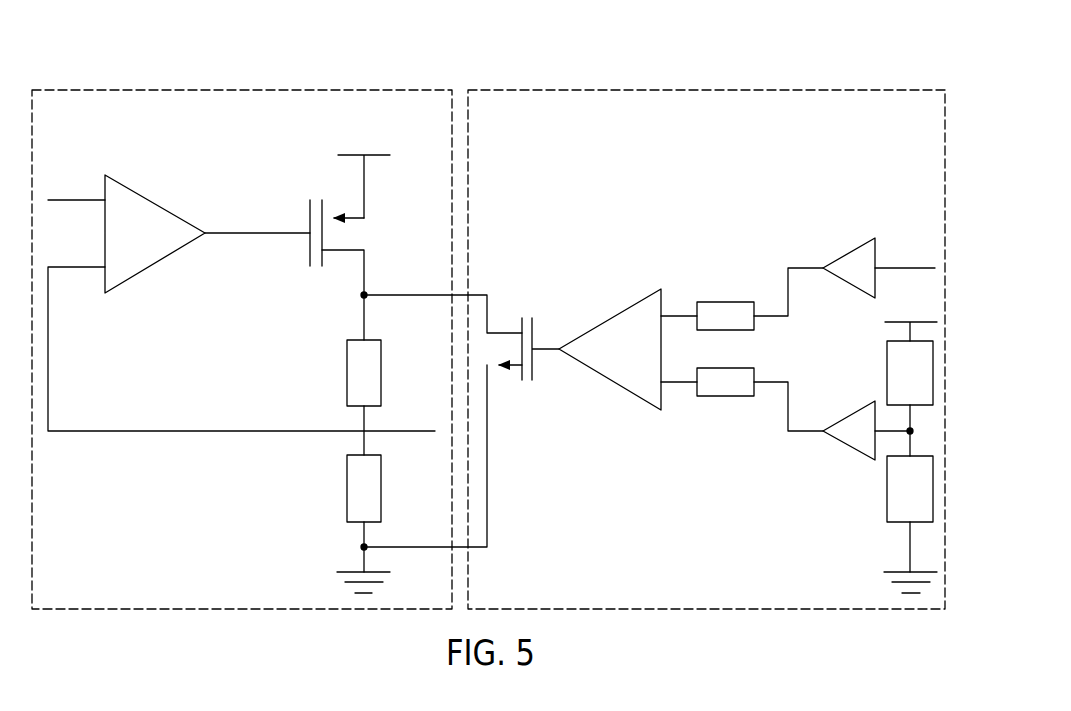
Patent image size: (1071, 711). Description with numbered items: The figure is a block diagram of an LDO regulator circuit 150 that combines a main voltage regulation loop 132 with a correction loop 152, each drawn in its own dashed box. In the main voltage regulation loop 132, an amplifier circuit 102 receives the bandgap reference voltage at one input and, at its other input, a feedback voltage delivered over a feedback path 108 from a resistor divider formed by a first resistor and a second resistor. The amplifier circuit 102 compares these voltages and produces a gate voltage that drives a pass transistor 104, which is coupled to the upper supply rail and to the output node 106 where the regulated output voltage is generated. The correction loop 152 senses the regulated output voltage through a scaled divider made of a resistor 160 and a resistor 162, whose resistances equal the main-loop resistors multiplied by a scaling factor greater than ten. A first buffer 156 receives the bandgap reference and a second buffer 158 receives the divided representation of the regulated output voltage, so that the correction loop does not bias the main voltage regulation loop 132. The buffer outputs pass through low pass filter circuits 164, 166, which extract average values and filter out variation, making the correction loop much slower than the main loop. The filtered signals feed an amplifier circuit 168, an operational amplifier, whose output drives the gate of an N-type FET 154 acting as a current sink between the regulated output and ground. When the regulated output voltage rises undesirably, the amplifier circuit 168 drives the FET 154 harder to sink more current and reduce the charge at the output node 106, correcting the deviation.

The LDO regulator circuit 150 is at (102, 50).
The main voltage regulation loop 132 is at (243, 90).
The correction loop 152 is at (705, 90).
The amplifier circuit 102 is at (160, 206).
The pass transistor 104 is at (307, 252).
The output node 106 is at (366, 324).
The feedback path 108 is at (203, 430).
The FET 154 is at (535, 368).
The amplifier circuit 168 is at (610, 320).
The low pass filter circuit 164 is at (725, 302).
The low pass filter circuit 166 is at (725, 368).
The first buffer 156 is at (848, 287).
The second buffer 158 is at (848, 413).
The resistor 160 is at (887, 378).
The resistor 162 is at (887, 488).